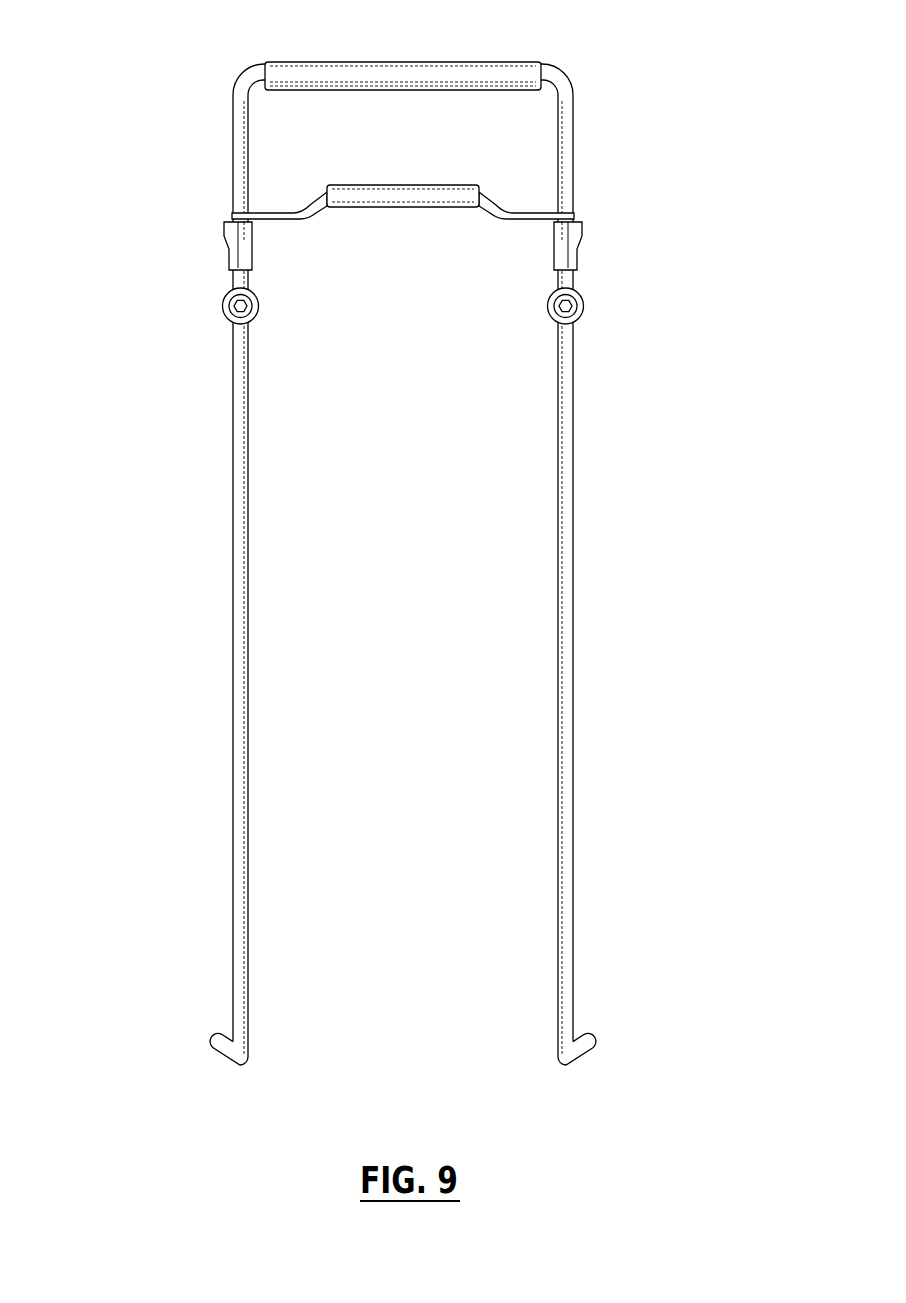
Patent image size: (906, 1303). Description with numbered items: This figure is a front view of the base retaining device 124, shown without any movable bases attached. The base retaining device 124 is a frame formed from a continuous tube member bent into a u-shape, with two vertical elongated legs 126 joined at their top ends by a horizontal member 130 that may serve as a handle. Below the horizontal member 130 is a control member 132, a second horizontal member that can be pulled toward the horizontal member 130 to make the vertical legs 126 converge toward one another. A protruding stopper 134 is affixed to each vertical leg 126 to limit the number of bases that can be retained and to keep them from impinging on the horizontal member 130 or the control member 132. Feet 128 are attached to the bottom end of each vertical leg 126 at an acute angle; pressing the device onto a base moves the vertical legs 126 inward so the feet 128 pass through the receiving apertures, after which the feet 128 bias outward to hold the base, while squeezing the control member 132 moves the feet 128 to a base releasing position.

The base retaining device 124 is at (403, 566).
The vertical elongated legs 126 is at (238, 625).
The feet 128 is at (222, 1060).
The horizontal member 130 is at (490, 87).
The control member 132 is at (453, 190).
The protruding stopper 134 is at (583, 305).